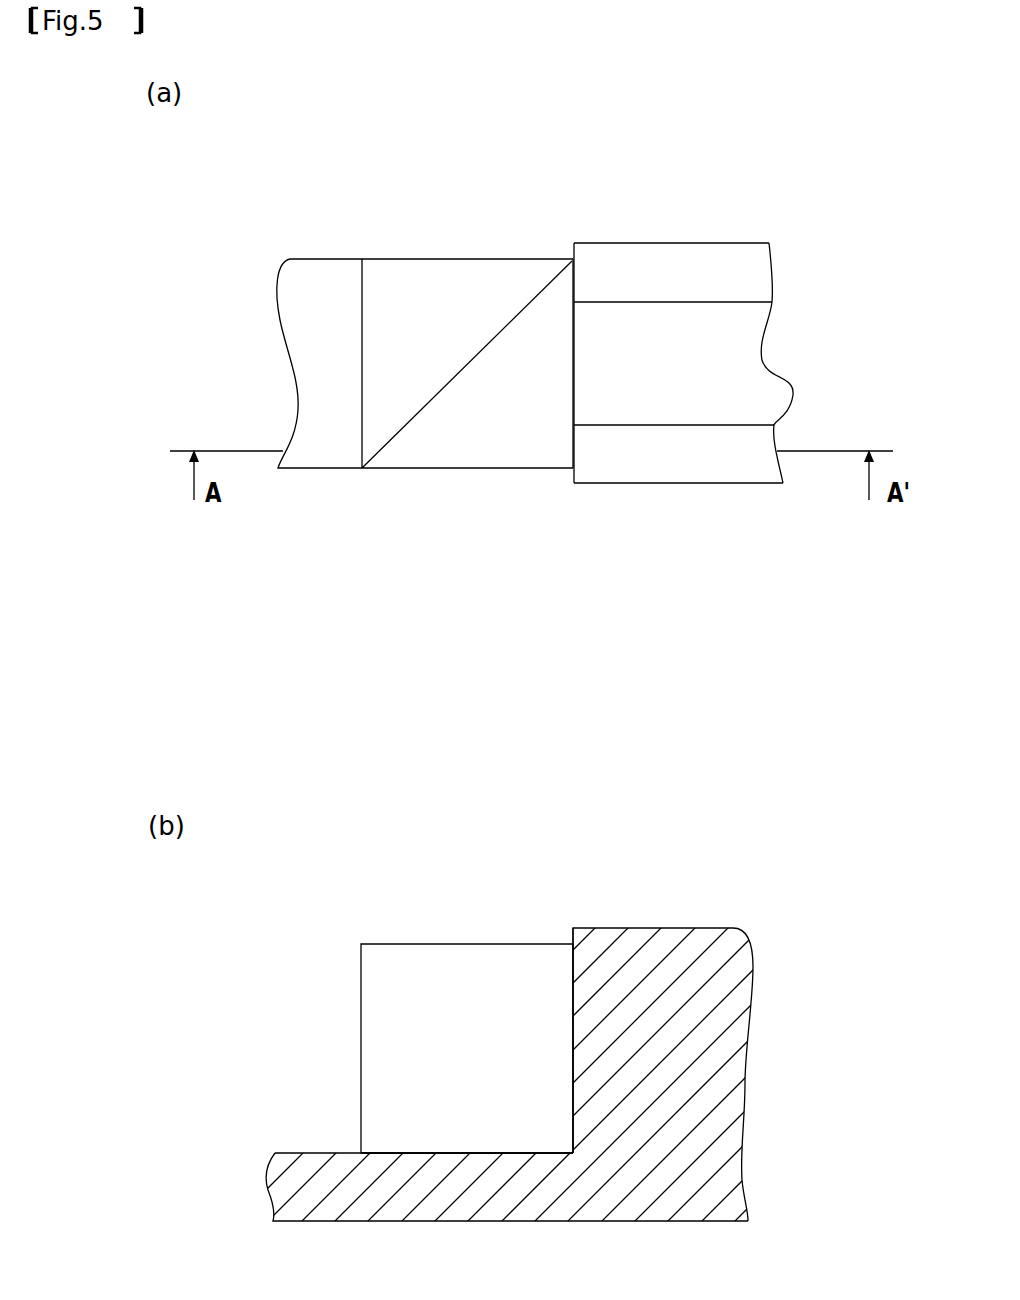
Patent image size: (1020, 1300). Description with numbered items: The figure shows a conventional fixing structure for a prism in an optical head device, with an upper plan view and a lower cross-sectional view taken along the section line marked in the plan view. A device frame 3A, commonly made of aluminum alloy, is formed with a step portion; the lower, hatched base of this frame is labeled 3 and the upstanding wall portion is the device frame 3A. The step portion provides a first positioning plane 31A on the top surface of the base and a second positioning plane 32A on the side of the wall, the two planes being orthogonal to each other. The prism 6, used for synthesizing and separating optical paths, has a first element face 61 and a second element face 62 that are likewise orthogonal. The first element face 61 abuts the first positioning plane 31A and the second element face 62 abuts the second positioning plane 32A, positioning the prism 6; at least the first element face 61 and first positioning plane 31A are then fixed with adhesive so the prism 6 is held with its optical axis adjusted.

The base plate 3 is at (387, 1200).
The device frame 3A is at (320, 246).
The first positioning plane 31A is at (443, 1155).
The second positioning plane 32A is at (577, 270).
The prism 6 is at (423, 246).
The first element face 61 is at (408, 1152).
The second element face 62 is at (574, 367).